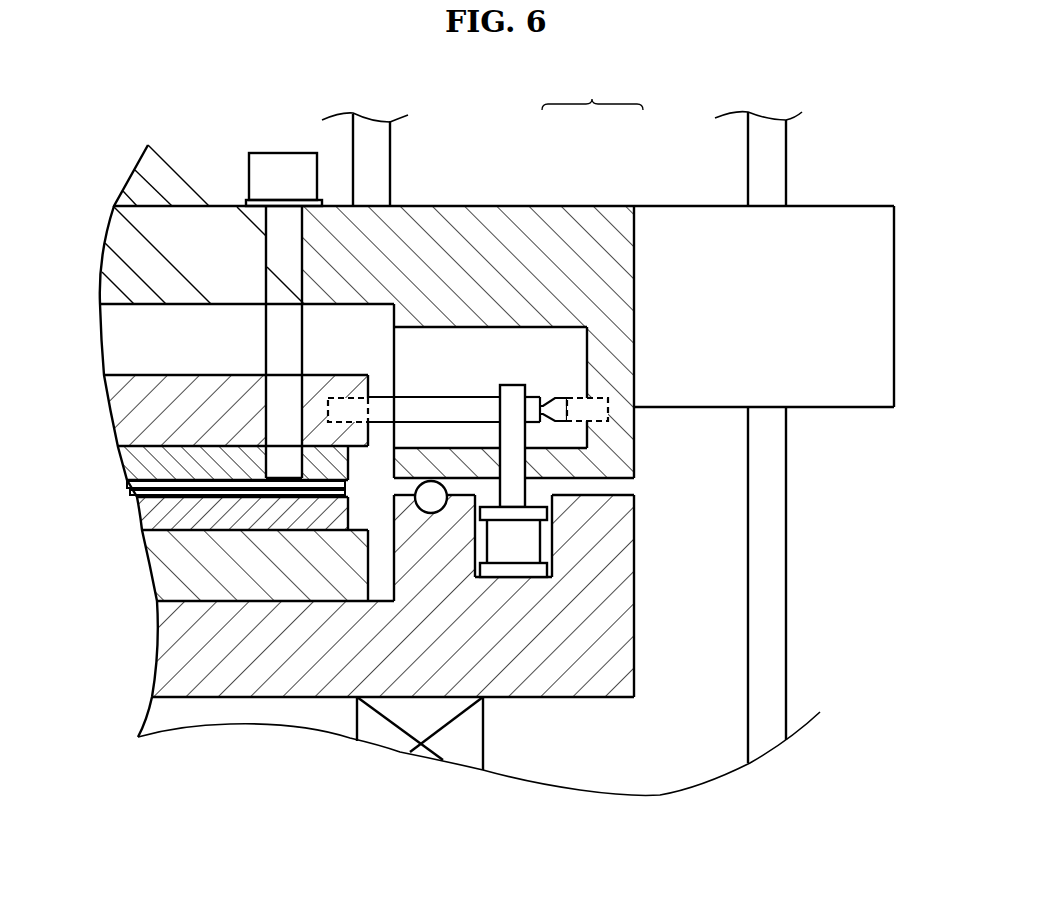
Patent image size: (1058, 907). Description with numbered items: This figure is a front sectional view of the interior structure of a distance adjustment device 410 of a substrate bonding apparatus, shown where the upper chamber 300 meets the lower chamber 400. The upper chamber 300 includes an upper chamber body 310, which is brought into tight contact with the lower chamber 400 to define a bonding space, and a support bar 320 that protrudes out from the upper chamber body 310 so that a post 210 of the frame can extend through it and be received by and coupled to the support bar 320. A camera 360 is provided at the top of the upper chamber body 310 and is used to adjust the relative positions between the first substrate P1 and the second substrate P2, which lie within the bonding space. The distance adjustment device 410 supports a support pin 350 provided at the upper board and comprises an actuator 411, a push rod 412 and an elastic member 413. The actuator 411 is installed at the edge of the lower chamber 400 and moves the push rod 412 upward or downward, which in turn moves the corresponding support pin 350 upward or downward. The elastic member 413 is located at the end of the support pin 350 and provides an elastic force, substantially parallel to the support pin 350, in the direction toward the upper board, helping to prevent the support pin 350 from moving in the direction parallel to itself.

The post 210 is at (773, 687).
The upper chamber 300 is at (592, 91).
The upper chamber body 310 is at (531, 206).
The support bar 320 is at (657, 206).
The support pin 350 is at (540, 400).
The camera 360 is at (284, 153).
The lower chamber 400 is at (637, 622).
The distance adjustment device 410 is at (679, 481).
The actuator 411 is at (533, 540).
The push rod 412 is at (527, 500).
The elastic member 413 is at (567, 420).
The first substrate P1 is at (127, 483).
The second substrate P2 is at (130, 496).